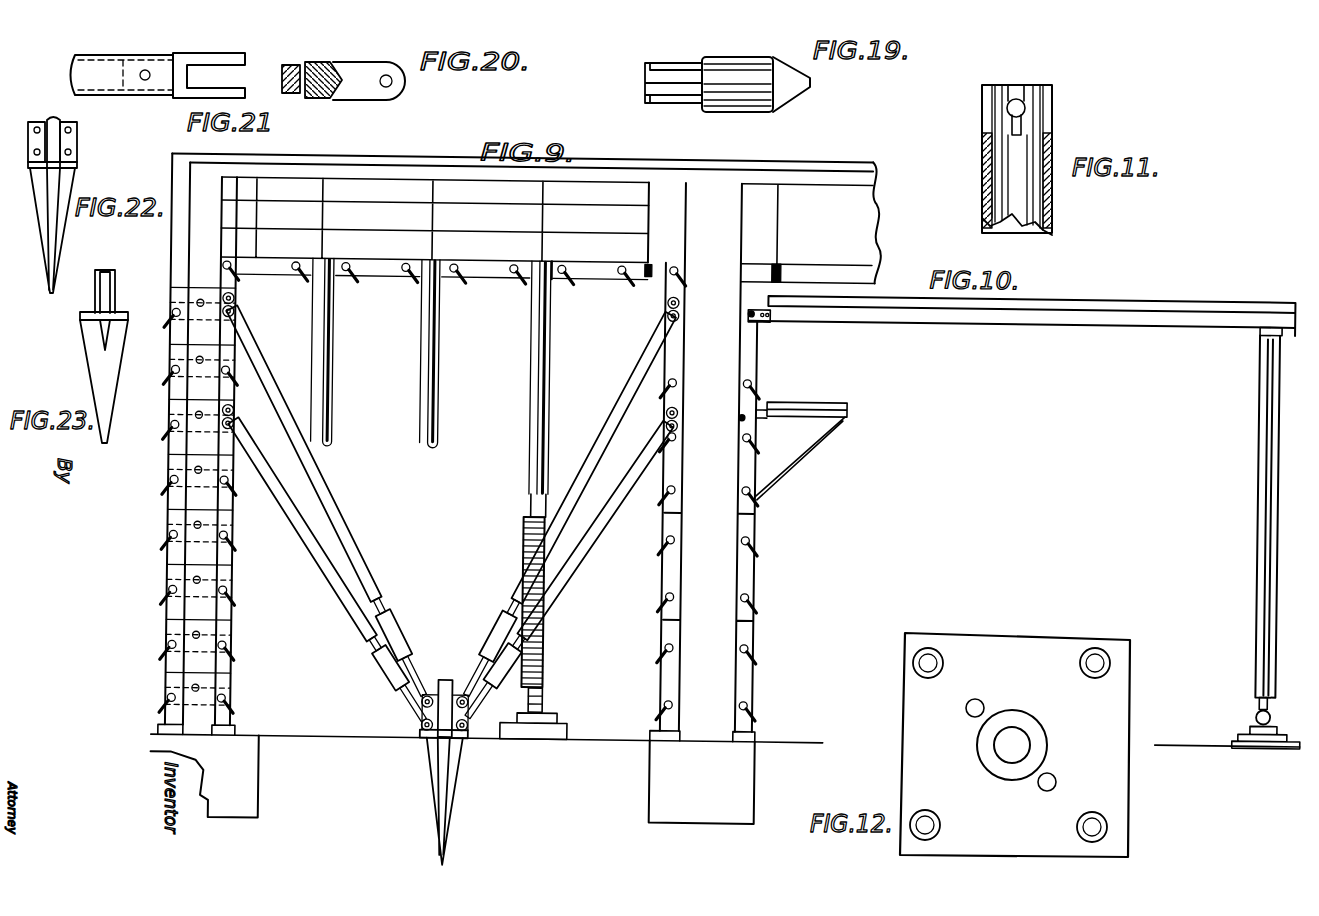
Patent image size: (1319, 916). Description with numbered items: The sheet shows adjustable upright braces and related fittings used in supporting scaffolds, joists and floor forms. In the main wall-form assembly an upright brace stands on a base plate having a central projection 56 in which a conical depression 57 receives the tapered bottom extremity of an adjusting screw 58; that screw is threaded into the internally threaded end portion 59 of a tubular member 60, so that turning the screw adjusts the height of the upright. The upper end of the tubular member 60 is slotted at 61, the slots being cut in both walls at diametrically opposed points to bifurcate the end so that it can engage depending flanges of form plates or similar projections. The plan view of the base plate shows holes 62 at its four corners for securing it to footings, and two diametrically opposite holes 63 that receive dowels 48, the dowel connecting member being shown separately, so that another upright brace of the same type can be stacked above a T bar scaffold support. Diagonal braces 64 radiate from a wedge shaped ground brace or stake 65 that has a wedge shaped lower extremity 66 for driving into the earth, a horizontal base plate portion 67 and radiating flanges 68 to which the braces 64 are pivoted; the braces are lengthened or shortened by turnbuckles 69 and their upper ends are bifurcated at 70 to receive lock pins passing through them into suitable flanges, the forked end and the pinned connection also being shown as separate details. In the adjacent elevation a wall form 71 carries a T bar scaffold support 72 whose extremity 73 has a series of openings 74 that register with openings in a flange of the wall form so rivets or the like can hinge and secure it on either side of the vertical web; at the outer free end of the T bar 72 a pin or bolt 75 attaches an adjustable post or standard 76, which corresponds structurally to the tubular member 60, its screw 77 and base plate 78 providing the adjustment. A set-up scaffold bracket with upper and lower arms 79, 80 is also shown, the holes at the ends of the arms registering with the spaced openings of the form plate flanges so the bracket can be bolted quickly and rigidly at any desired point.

In FIG. 19, the dowel 48 is at (740, 87).
In FIG. 9, the central projection 56 is at (550, 715).
In FIG. 12, the central projection 56 is at (1027, 717).
In FIG. 12, the conical depression 57 is at (1027, 743).
In FIG. 9, the adjusting screw 58 is at (550, 694).
In FIG. 9, the internally threaded end portion 59 is at (549, 666).
In FIG. 9, the tubular member 60 is at (432, 340).
In FIG. 9, the slots 61 is at (553, 279).
In FIG. 11, the slots 61 is at (982, 108).
In FIG. 12, the holes 62 is at (915, 662).
In FIG. 12, the holes 63 is at (978, 702).
In FIG. 9, the diagonal braces 64 is at (351, 535).
In FIG. 21, the diagonal braces 64 is at (85, 53).
In FIG. 9, the ground brace or stake 65 is at (454, 684).
In FIG. 22, the ground brace or stake 65 is at (50, 115).
In FIG. 23, the ground brace or stake 65 is at (95, 277).
In FIG. 9, the wedge shaped lower extremity 66 is at (453, 777).
In FIG. 22, the wedge shaped lower extremity 66 is at (53, 227).
In FIG. 23, the wedge shaped lower extremity 66 is at (97, 373).
In FIG. 9, the horizontal base plate portion 67 is at (437, 736).
In FIG. 22, the horizontal base plate portion 67 is at (73, 163).
In FIG. 23, the horizontal base plate portion 67 is at (80, 318).
In FIG. 9, the radiating flanges 68 is at (478, 714).
In FIG. 22, the radiating flanges 68 is at (77, 140).
In FIG. 23, the radiating flanges 68 is at (115, 283).
In FIG. 9, the turnbuckles 69 is at (417, 678).
In FIG. 9, the bifurcated upper ends 70 is at (239, 302).
In FIG. 21, the bifurcated upper ends 70 is at (207, 57).
In FIG. 20, the bifurcated upper ends 70 is at (345, 62).
In FIG. 10, the wall form 71 is at (752, 566).
In FIG. 10, the T bar scaffold support 72 is at (1025, 311).
In FIG. 10, the extremity 73 is at (750, 310).
In FIG. 10, the openings 74 is at (772, 311).
In FIG. 10, the pin or bolt 75 is at (1262, 324).
In FIG. 10, the adjustable post or standard 76 is at (1262, 502).
In FIG. 10, the screw 77 is at (1262, 702).
In FIG. 10, the base plate 78 is at (1253, 735).
In FIG. 12, the base plate 78 is at (1000, 642).
In FIG. 10, the upper arm 79 is at (776, 411).
In FIG. 10, the lower arm 80 is at (801, 450).